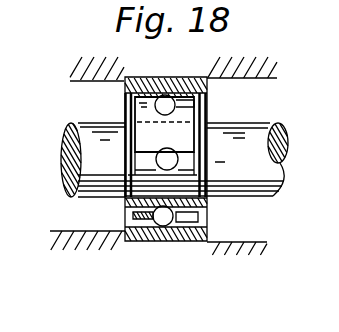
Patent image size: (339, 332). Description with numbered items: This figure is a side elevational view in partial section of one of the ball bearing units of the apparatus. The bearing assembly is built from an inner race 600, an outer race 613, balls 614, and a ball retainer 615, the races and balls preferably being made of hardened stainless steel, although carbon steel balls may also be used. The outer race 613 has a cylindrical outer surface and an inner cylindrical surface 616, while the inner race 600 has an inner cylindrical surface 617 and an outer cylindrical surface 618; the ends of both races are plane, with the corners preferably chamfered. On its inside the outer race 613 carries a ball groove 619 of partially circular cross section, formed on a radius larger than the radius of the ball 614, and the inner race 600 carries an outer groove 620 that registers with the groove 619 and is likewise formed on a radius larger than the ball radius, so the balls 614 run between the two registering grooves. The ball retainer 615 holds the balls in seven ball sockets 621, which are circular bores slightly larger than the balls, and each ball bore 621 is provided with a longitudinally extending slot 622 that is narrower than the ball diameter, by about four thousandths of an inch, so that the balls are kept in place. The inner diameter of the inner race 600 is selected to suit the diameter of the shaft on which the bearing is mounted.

The inner race 600 is at (212, 203).
The outer race 613 is at (122, 112).
The balls 614 is at (163, 228).
The ball retainer 615 is at (184, 142).
The inner cylindrical surface 616 is at (123, 105).
The inner cylindrical surface 617 is at (122, 198).
The outer cylindrical surface 618 is at (125, 197).
The ball groove 619 is at (152, 74).
The outer groove 620 is at (195, 200).
The ball sockets 621 is at (125, 152).
The longitudinally extending slot 622 is at (178, 172).